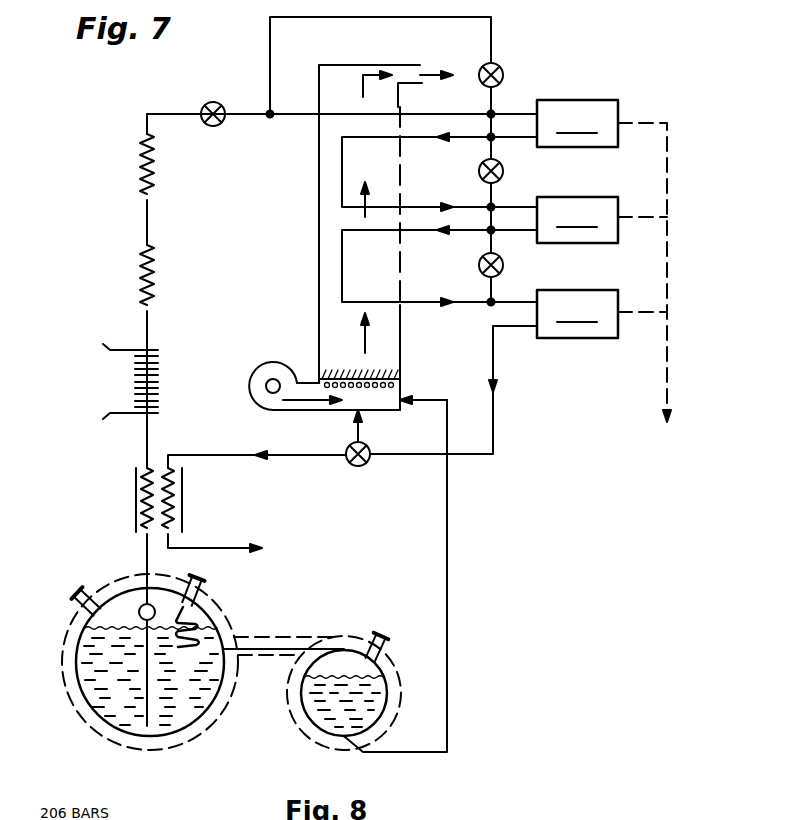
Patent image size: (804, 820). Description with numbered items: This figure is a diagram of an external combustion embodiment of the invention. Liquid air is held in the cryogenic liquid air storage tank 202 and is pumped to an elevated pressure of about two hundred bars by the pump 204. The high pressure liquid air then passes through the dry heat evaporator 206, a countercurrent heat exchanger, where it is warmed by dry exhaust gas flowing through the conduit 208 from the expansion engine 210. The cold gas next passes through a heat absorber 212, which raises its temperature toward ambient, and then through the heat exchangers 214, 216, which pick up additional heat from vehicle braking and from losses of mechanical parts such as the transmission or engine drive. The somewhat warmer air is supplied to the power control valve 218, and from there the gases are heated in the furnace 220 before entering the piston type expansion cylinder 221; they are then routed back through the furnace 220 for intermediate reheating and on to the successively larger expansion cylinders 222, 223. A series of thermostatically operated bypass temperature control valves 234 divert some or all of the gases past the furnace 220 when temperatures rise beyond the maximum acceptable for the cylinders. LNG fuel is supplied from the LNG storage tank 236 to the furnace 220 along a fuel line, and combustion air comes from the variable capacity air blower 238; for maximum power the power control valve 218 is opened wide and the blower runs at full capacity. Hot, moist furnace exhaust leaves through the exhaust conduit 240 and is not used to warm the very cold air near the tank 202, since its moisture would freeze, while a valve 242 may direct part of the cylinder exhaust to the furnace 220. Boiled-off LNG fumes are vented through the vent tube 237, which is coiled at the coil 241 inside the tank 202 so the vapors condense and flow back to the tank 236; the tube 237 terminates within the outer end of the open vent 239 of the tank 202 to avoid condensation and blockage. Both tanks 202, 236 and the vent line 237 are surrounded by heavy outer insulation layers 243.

The liquid air storage tank 202 is at (90, 690).
The pump 204 is at (138, 602).
The dry heat evaporator 206 is at (183, 503).
The conduit 208 is at (295, 458).
The expansion engine 210 is at (647, 176).
The heat absorber 212 is at (157, 377).
The heat exchanger 214 is at (152, 273).
The heat exchanger 216 is at (152, 163).
The power control valve 218 is at (207, 101).
The furnace 220 is at (313, 237).
The expansion cylinder 221 is at (450, 678).
The expansion cylinder 222 is at (577, 220).
The expansion cylinder 223 is at (577, 314).
The temperature control valves 234 is at (500, 65).
The LNG storage tank 236 is at (377, 693).
The vent tube 237 is at (313, 650).
The variable capacity air blower 238 is at (260, 365).
The open vent 239 is at (208, 590).
The exhaust conduit 240 is at (408, 72).
The coil 241 is at (217, 623).
The valve 242 is at (368, 467).
The insulation layers 243 is at (108, 733).